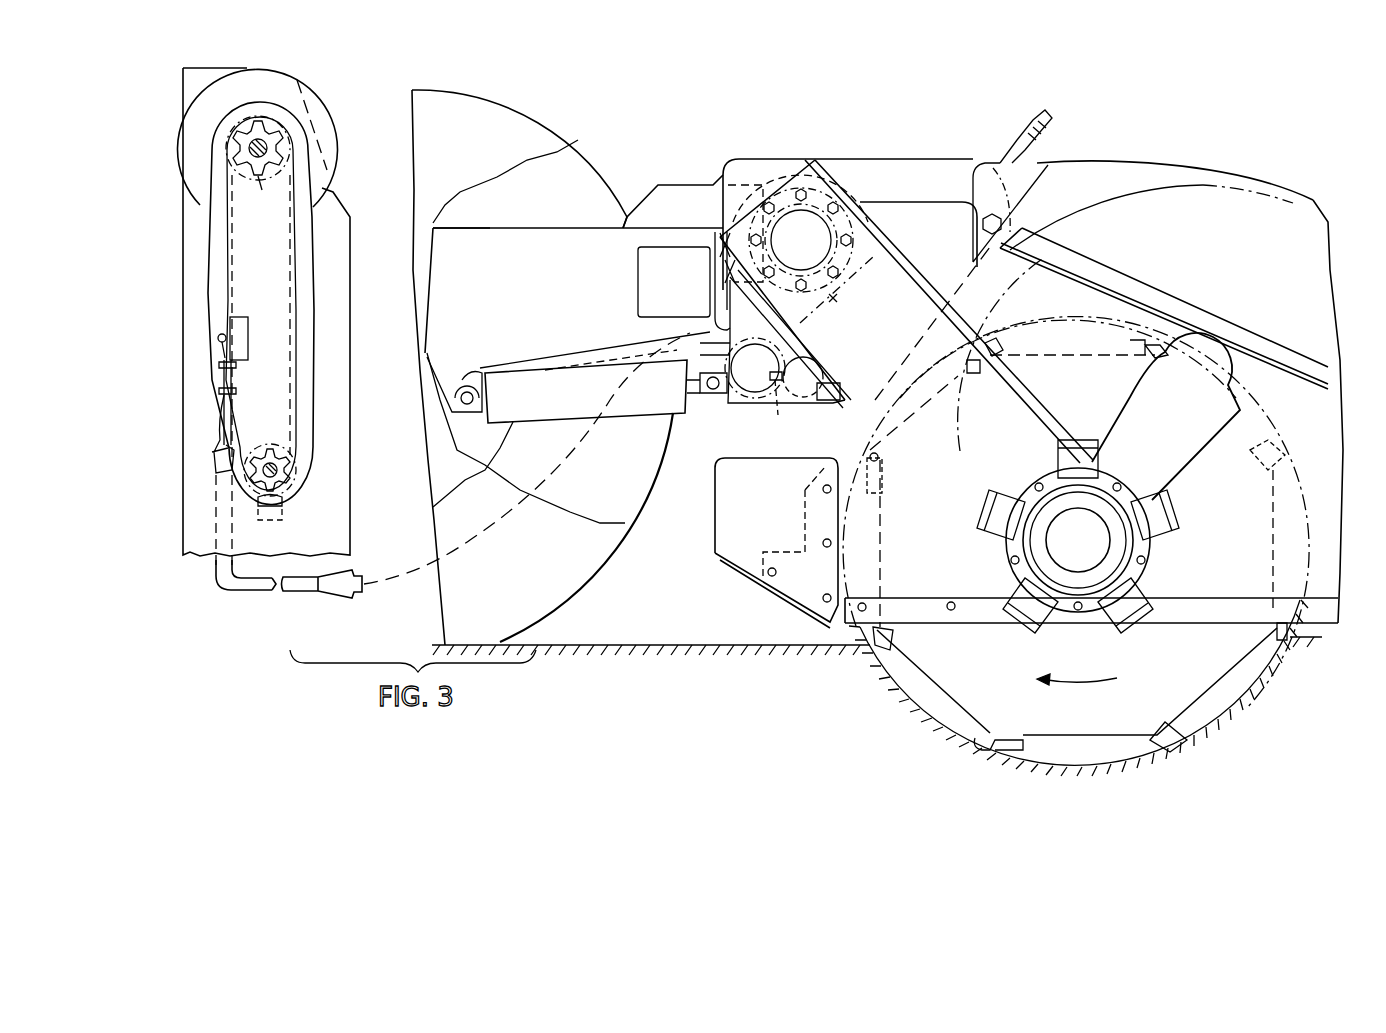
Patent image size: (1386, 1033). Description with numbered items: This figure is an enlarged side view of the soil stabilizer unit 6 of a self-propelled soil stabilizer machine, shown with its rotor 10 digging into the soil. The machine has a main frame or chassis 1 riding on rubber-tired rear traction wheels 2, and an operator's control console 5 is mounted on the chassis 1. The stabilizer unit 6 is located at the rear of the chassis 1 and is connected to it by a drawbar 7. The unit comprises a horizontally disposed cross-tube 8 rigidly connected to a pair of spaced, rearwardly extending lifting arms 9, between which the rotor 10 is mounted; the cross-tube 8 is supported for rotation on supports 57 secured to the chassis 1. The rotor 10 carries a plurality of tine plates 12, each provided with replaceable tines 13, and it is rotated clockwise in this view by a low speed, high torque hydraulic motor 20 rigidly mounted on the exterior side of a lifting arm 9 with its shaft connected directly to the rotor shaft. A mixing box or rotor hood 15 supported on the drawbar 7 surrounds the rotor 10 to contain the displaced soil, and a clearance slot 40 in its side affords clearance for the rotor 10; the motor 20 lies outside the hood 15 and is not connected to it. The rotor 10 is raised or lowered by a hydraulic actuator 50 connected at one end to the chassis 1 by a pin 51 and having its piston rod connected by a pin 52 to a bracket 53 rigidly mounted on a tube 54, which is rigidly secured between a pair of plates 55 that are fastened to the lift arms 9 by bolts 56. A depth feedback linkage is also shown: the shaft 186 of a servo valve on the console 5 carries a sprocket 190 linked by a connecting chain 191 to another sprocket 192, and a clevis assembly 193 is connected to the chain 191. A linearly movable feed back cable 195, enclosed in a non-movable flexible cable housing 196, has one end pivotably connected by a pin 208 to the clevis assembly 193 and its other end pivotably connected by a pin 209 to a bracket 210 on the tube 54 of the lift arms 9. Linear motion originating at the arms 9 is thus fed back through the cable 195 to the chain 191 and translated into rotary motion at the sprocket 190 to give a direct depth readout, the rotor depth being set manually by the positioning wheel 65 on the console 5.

The main frame or chassis 1 is at (542, 289).
The rear traction wheel 2 is at (528, 129).
The operator's control console 5 is at (343, 252).
The soil stabilizer unit 6 is at (1274, 160).
The drawbar 7 is at (890, 159).
The cross-tube 8 is at (850, 221).
The lifting arm 9 is at (914, 263).
The rotor 10 is at (1214, 707).
The tine plate 12 is at (1162, 696).
The tine 13 is at (1167, 343).
The rotor hood 15 is at (1128, 158).
The hydraulic motor 20 is at (1137, 503).
The clearance slot 40 is at (1115, 425).
The hydraulic actuator 50 is at (530, 417).
The pin 51 is at (466, 390).
The pin 52 is at (712, 392).
The bracket 53 is at (755, 394).
The tube 54 is at (777, 402).
The plate 55 is at (804, 400).
The bolt 56 is at (722, 292).
The support 57 is at (840, 298).
The rotor depth positioning wheel 65 is at (327, 107).
The servo valve shaft 186 is at (272, 149).
The sprocket 190 is at (262, 190).
The connecting chain 191 is at (235, 253).
The sprocket 192 is at (272, 448).
The clevis assembly 193 is at (248, 327).
The feed back cable 195 is at (367, 587).
The cable housing 196 is at (253, 589).
The pin 208 is at (218, 338).
The pin 209 is at (700, 333).
The bracket 210 is at (745, 342).